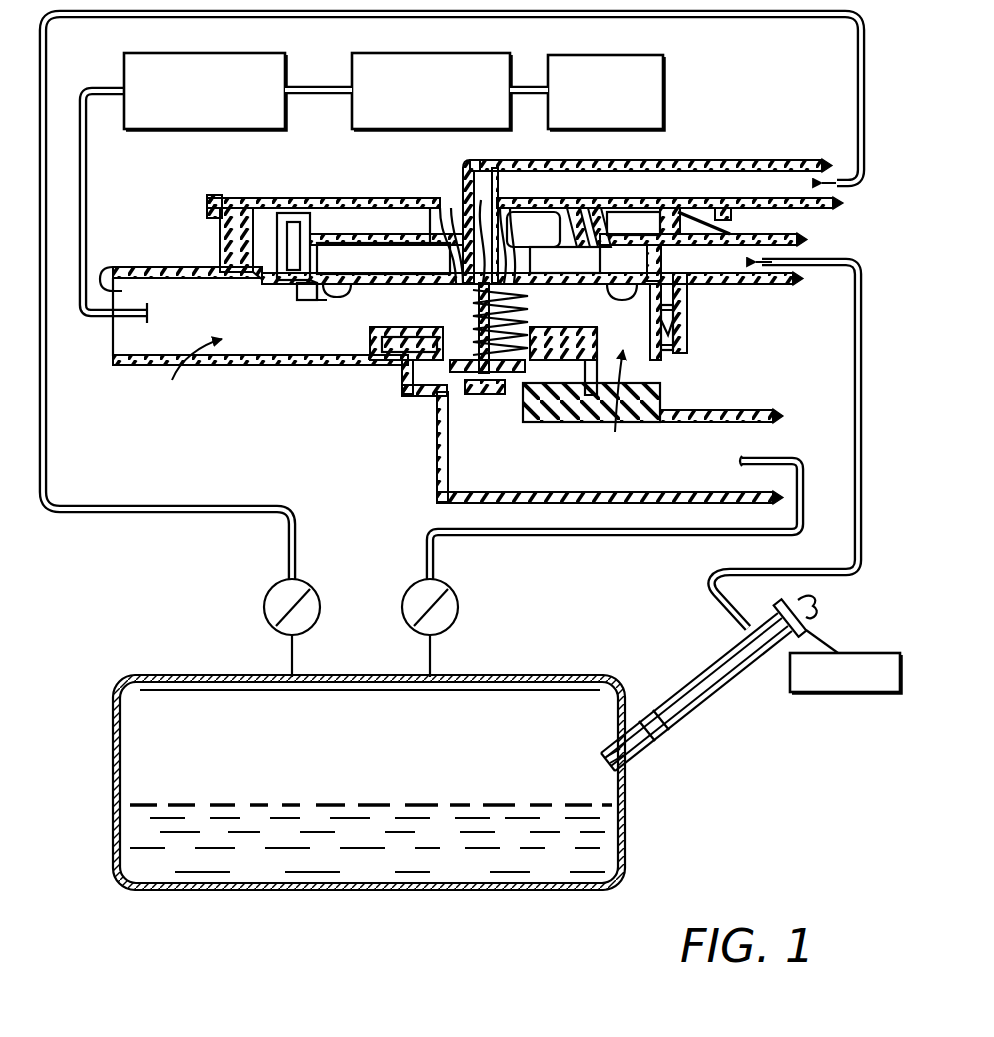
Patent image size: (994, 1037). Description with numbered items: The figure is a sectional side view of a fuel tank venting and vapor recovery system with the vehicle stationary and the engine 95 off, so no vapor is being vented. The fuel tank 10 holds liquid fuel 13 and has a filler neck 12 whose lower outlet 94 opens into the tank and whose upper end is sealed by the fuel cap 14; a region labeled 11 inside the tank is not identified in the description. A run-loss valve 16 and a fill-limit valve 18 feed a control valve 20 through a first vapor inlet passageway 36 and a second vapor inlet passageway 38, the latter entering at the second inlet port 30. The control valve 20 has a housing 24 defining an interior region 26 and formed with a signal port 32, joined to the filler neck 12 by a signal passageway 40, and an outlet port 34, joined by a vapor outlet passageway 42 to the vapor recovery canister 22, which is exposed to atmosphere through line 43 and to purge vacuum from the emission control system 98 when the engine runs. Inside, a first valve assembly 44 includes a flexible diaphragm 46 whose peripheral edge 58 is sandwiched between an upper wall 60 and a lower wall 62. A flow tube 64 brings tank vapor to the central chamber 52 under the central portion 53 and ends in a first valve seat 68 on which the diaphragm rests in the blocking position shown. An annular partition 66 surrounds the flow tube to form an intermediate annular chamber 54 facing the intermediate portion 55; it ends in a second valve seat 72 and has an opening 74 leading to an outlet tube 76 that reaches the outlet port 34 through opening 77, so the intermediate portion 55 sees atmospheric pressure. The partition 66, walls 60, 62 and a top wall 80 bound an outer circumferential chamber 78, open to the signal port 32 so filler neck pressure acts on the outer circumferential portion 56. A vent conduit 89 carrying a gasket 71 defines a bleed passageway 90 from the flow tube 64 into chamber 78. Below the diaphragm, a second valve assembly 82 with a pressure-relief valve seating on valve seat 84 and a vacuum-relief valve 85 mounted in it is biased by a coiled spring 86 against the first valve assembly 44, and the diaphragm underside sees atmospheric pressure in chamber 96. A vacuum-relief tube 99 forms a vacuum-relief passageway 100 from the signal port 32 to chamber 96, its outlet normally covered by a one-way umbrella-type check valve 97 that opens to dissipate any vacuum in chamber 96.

The fuel tank 10 is at (112, 730).
The fuel tank interior / vapor space 11 is at (541, 704).
The filler neck 12 is at (710, 692).
The liquid fuel 13 is at (549, 866).
The fuel cap 14 is at (805, 600).
The run-loss valve 16 is at (321, 601).
The fill-limit valve 18 is at (460, 610).
The control valve 20 is at (760, 113).
The fuel vapor recovery device 22 is at (250, 53).
The housing 24 is at (398, 396).
The interior region 26 is at (350, 352).
The second inlet port 30 is at (770, 427).
The signal port 32 is at (806, 281).
The outlet port 34 is at (103, 266).
The vapor inlet passageway 36 is at (47, 48).
The vapor inlet passageway 38 is at (838, 177).
The signal passageway 40 is at (853, 365).
The vapor outlet passageway 42 is at (86, 217).
The line 43 is at (302, 86).
The first valve assembly 44 is at (315, 342).
The flexible diaphragm 46 is at (326, 292).
The central chamber 52 is at (478, 176).
The central portion 53 is at (483, 165).
The intermediate annular chamber 54 is at (452, 263).
The intermediate portion 55 is at (505, 250).
The outer circumferential portion 56 is at (654, 280).
The peripheral edge 58 is at (305, 293).
The upper wall 60 is at (313, 253).
The lower wall 62 is at (305, 302).
The flow tube 64 is at (723, 155).
The annular partition 66 is at (440, 250).
The first valve seat 68 is at (500, 215).
The gasket 71 is at (568, 236).
The second valve seat 72 is at (408, 288).
The opening 74 is at (432, 252).
The outlet tube 76 is at (330, 207).
The opening 77 is at (257, 281).
The outer circumferential chamber 78 is at (372, 252).
The top wall 80 is at (377, 230).
The second valve assembly 82 is at (512, 400).
The valve seat 84 is at (553, 384).
The vacuum-relief valve 85 is at (480, 398).
The spring 86 is at (523, 314).
The vent conduit 89 is at (612, 218).
The bleed passageway 90 is at (597, 293).
The lower outlet 94 is at (602, 763).
The engine 95 is at (633, 53).
The chamber 96 is at (401, 397).
The one-way umbrella-type check valve 97 is at (638, 345).
The emission control system 98 is at (457, 53).
The vacuum-relief tube 99 is at (692, 292).
The vacuum-relief passageway 100 is at (674, 355).